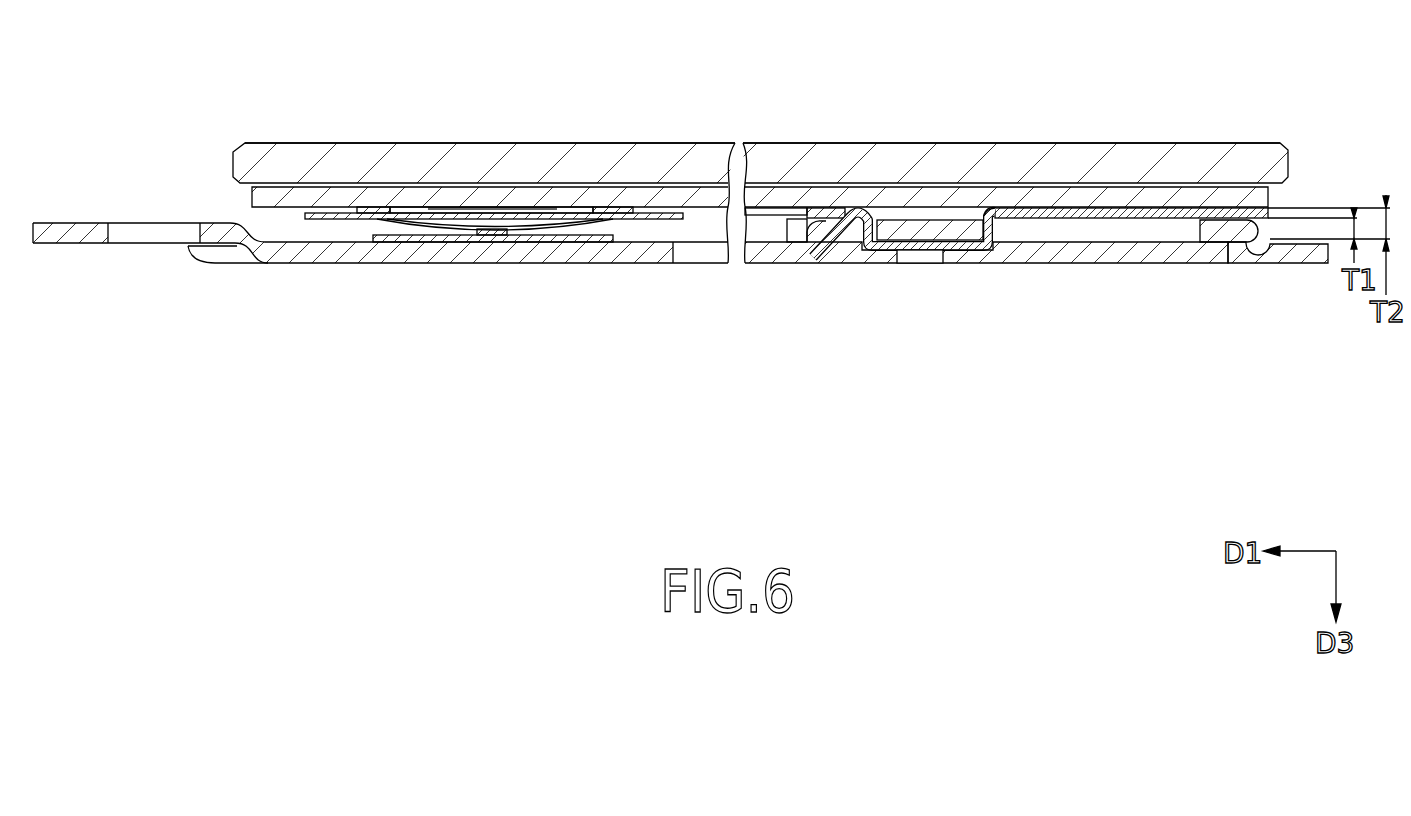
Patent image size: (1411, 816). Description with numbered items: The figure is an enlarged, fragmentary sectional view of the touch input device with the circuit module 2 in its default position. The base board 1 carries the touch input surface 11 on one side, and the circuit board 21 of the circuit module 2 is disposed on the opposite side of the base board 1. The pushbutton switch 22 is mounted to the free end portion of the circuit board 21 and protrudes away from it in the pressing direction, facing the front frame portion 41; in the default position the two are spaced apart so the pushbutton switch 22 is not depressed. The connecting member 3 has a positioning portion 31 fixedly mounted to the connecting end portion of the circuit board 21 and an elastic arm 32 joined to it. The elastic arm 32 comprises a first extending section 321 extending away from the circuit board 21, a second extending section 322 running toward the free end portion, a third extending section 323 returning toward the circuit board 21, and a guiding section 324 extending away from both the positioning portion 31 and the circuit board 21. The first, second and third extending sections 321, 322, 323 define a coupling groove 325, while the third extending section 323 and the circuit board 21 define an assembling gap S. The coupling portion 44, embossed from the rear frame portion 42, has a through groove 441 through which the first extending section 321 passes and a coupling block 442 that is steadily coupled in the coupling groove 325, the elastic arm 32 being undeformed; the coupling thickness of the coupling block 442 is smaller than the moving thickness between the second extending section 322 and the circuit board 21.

The base board 1 is at (452, 135).
The touch input surface 11 is at (583, 143).
The circuit module 2 is at (676, 178).
The circuit board 21 is at (327, 195).
The pushbutton switch 22 is at (502, 232).
The front frame portion 41 is at (480, 257).
The connecting member 3 is at (1021, 251).
The positioning portion 31 is at (1140, 215).
The elastic arm 32 is at (922, 330).
The first extending section 321 is at (1029, 289).
The second extending section 322 is at (960, 246).
The third extending section 323 is at (868, 238).
The guiding section 324 is at (822, 262).
The coupling groove 325 is at (990, 220).
The assembling gap S is at (860, 210).
The coupling portion 44 is at (1208, 235).
The through groove 441 is at (1090, 230).
The coupling block 442 is at (928, 220).
The rear frame portion 42 is at (1295, 257).